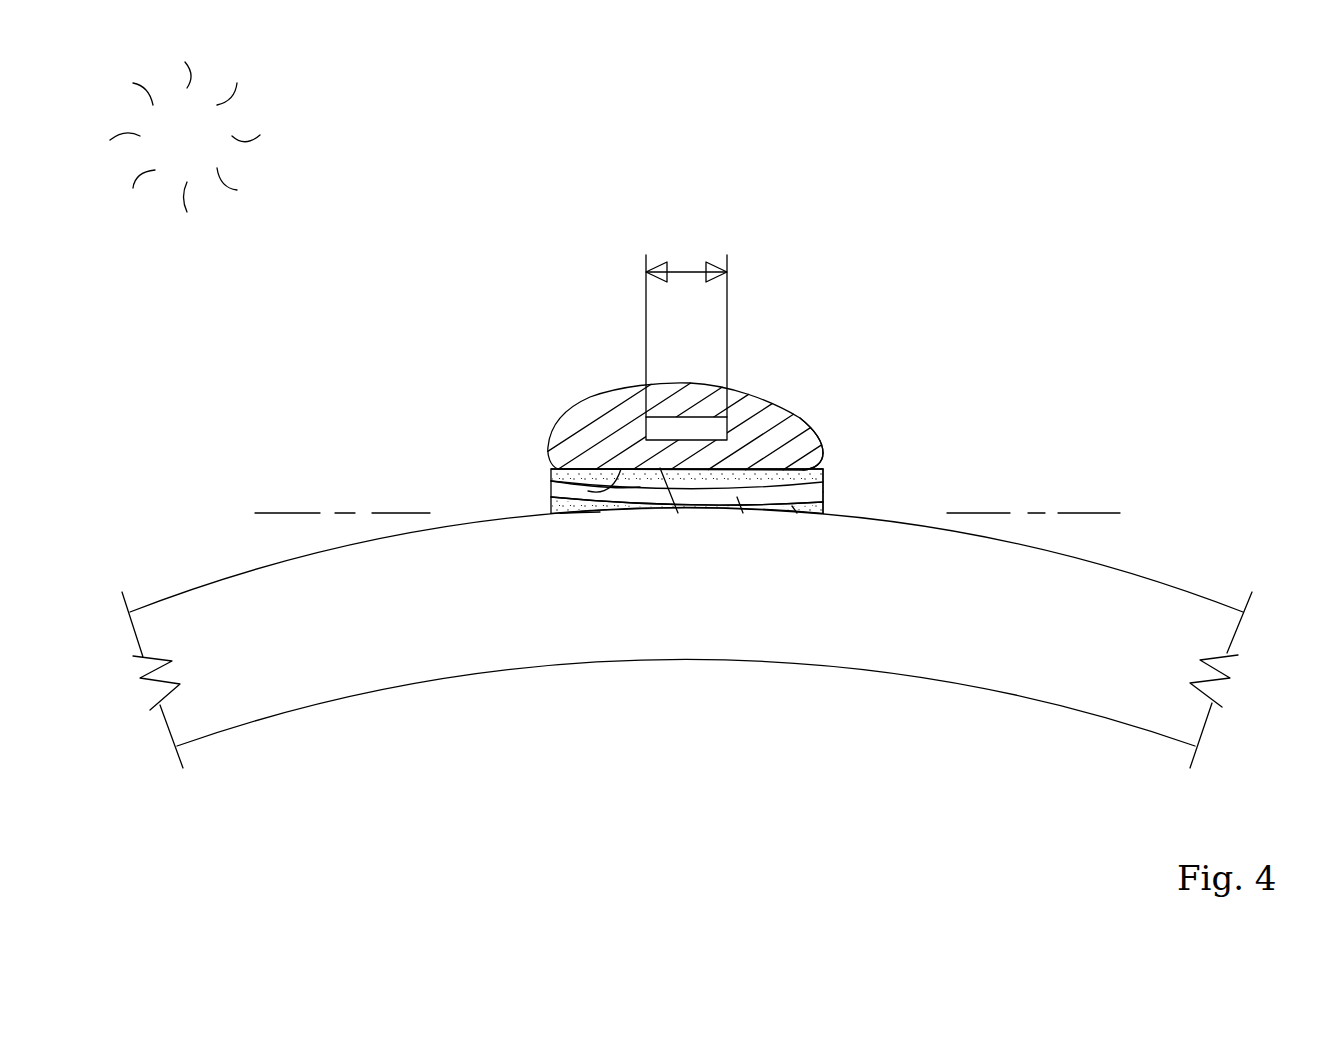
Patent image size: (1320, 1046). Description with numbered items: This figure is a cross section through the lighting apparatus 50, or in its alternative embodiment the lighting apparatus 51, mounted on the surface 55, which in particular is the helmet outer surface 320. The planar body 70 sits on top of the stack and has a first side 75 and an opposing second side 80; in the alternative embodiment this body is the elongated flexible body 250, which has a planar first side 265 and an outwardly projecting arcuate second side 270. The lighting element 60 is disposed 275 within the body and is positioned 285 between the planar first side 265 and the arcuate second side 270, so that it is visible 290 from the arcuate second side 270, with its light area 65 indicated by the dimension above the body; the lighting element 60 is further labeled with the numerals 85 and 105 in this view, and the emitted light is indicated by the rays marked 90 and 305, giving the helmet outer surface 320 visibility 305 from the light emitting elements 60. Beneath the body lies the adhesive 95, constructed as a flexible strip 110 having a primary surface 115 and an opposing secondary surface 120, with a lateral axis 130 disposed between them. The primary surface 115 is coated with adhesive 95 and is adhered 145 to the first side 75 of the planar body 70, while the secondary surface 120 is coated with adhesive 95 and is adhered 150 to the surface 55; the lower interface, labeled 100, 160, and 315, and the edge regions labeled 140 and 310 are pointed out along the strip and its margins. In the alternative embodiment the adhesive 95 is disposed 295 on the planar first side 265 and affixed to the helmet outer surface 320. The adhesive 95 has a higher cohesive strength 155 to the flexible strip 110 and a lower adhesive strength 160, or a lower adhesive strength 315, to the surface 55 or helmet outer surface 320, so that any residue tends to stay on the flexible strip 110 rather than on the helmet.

The lighting apparatus 50 is at (795, 424).
The lighting apparatus (alternative embodiment) 51 is at (1137, 128).
The surface 55 is at (697, 609).
The lighting element 60 is at (828, 325).
The light area 65 is at (687, 270).
The planar body 70 is at (636, 398).
The first side 75 is at (604, 491).
The second side 80 is at (670, 398).
The sensor 85 is at (828, 325).
The light 90 is at (185, 137).
The adhesive 95 is at (678, 513).
The bottom surface 100 is at (534, 642).
The electrode 105 is at (828, 325).
The flexible strip 110 is at (824, 491).
The primary surface 115 is at (551, 481).
The secondary surface 120 is at (740, 510).
The lateral axis 130 is at (265, 512).
The edge region 140 is at (793, 510).
The adhered (primary surface to planar body first side) 145 is at (549, 471).
The adhered (secondary surface to surface) 150 is at (1006, 429).
The cohesive strength 155 is at (756, 534).
The lower adhesive strength 160 is at (534, 642).
The elongated flexible body 250 is at (824, 447).
The planar first side 265 is at (550, 497).
The outwardly projecting arcuate second side 270 is at (599, 405).
The disposed (light emitting elements within body) 275 is at (828, 325).
The positioned (between first and second sides) 285 is at (729, 425).
The visible (from arcuate second side) 290 is at (185, 137).
The disposed (adhesive on planar first side) 295 is at (824, 463).
The visibility 305 is at (185, 137).
The substrate edge 310 is at (824, 503).
The lower adhesive strength (to helmet outer surface) 315 is at (580, 513).
The helmet outer surface 320 is at (1192, 588).